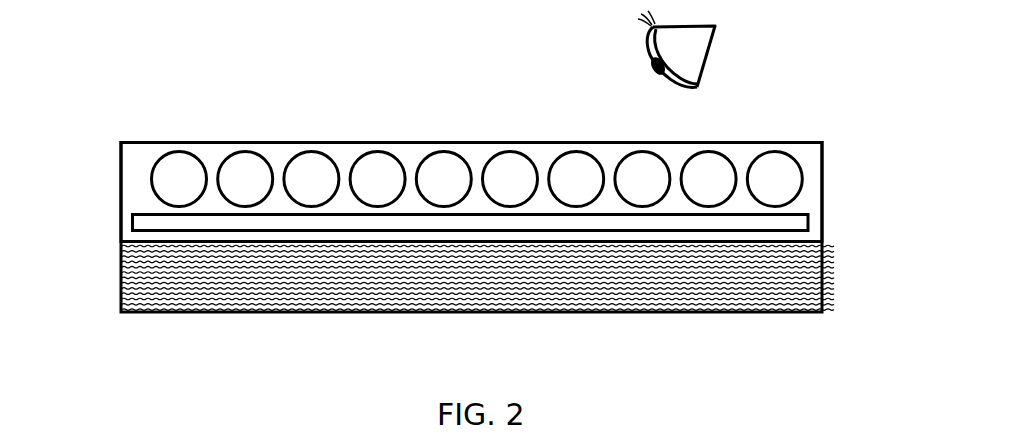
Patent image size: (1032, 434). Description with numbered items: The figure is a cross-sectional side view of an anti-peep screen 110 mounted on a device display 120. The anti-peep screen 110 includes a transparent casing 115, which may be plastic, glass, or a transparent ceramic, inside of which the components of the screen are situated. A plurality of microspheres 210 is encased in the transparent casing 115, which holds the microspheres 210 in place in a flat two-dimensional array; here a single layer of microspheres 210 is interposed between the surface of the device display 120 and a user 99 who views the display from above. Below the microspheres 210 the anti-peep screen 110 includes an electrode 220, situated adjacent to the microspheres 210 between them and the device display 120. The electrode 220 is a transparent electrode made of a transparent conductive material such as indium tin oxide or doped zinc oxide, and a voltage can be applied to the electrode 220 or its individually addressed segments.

The anti-peep screen 110 is at (133, 128).
The transparent casing 115 is at (807, 155).
The device display 120 is at (175, 269).
The microspheres 210 is at (178, 178).
The electrode 220 is at (145, 224).
The user 99 is at (703, 55).